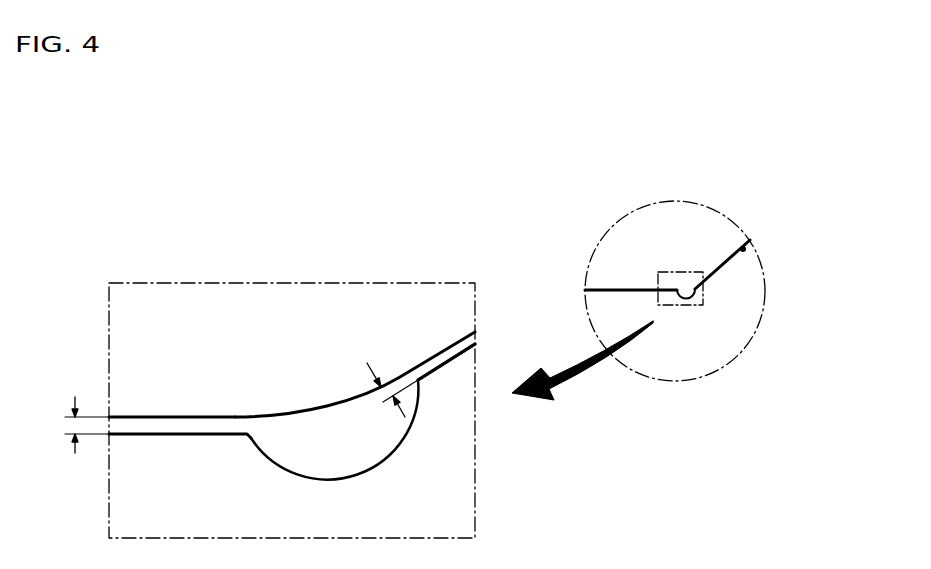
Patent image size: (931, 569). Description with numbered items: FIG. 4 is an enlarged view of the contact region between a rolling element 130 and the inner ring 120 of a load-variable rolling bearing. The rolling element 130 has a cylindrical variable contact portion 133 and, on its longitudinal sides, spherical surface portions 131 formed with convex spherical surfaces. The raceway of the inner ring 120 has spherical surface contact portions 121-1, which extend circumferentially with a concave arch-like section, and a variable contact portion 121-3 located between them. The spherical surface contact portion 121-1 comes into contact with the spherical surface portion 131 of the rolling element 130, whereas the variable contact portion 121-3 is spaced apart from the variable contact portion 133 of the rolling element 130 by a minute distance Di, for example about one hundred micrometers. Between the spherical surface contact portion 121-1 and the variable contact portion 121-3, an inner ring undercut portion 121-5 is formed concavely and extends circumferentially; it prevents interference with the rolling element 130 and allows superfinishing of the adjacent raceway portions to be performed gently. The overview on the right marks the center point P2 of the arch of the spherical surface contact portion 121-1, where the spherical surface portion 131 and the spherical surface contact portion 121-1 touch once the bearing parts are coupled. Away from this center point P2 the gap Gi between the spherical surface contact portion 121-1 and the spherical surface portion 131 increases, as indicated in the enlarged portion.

The rolling element 130 is at (655, 226).
The spherical surface portion 131 is at (734, 253).
The variable contact portion 133 is at (620, 292).
The inner ring 120 is at (683, 362).
The spherical surface contact portion 121-1 is at (720, 267).
The variable contact portion 121-3 is at (620, 296).
The inner ring undercut portion 121-5 is at (697, 304).
The center point P2 is at (745, 249).
The minute distance Di is at (75, 425).
The gap Gi is at (382, 394).